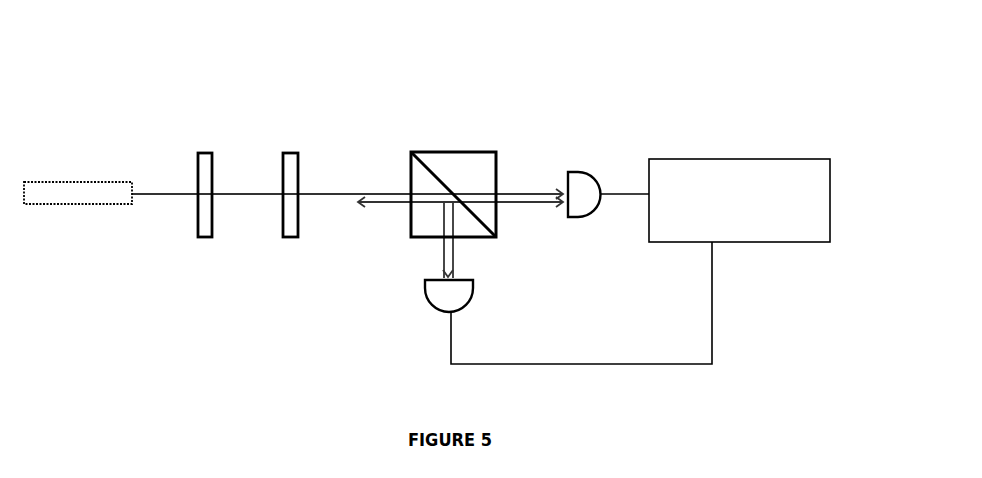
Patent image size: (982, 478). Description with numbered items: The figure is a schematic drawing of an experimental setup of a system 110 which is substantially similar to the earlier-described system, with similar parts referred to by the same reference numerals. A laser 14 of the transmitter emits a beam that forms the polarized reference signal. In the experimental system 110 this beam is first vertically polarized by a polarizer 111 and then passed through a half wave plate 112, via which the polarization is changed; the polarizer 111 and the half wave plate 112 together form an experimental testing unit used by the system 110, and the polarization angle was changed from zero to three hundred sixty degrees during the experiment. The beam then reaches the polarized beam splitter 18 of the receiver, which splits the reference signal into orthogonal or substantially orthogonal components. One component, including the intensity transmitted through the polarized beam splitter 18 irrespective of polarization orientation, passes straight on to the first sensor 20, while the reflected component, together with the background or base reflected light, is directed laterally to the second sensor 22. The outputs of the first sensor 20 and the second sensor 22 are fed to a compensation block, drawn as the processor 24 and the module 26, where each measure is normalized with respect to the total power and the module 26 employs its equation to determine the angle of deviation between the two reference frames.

The system 110 is at (196, 80).
The laser 14 is at (70, 206).
The polarizer 111 is at (203, 227).
The half wave plate 112 is at (292, 230).
The polarized beam splitter 18 is at (477, 168).
The first sensor 20 is at (587, 194).
The second sensor 22 is at (453, 303).
The processor 24 is at (757, 174).
The module 26 is at (725, 167).